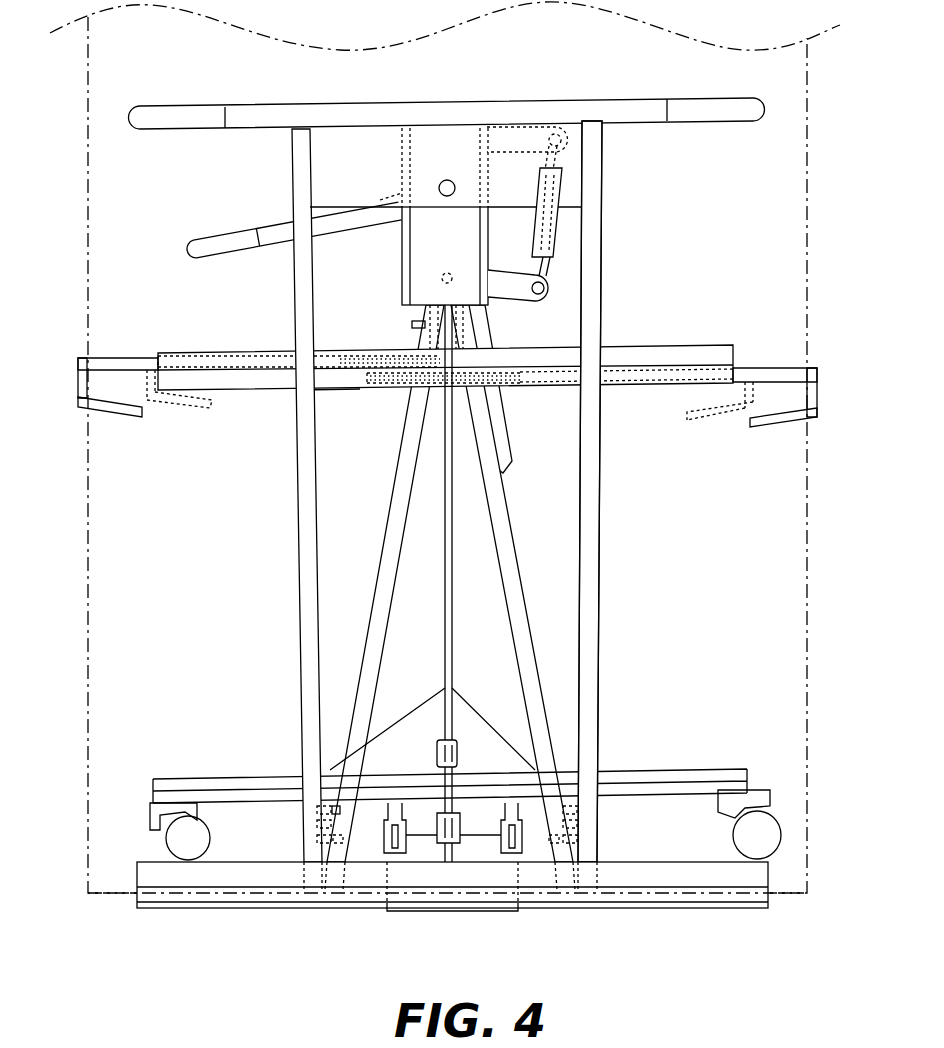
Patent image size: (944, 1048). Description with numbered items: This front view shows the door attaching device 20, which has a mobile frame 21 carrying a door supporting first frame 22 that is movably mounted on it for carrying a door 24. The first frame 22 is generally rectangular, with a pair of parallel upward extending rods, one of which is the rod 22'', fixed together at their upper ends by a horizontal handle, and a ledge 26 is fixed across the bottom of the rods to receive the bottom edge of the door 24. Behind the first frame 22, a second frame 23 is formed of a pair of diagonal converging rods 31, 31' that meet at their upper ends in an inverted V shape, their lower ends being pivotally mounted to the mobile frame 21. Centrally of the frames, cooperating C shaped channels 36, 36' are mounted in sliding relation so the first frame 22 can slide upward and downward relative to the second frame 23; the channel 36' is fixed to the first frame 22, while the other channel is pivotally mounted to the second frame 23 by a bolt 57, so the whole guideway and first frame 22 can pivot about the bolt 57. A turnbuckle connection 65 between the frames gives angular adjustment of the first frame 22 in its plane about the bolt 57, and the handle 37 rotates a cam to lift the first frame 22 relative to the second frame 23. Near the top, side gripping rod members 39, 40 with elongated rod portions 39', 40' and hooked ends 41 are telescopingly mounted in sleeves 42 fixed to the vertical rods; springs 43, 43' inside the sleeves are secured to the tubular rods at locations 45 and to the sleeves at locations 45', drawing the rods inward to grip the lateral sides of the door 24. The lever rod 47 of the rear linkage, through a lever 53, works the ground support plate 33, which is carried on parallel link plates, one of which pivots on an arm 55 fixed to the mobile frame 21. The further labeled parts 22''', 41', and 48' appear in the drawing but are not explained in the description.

The door attaching device 20 is at (500, 390).
The mobile frame 21 is at (438, 698).
The first frame 22 is at (633, 491).
The upward extending rod 22'' is at (447, 494).
The upright post 22''' is at (629, 505).
The second frame 23 is at (502, 496).
The door 24 is at (809, 523).
The ledge 26 is at (283, 908).
The rod 31 is at (513, 597).
The rod 31' is at (384, 597).
The support plate 33 is at (517, 908).
The C shaped channel 36 is at (414, 216).
The guideway 36' is at (511, 216).
The handle 37 is at (230, 253).
The side gripping rod member 39 is at (118, 331).
The elongated rod portion 39' is at (167, 355).
The side gripping rod member 40 is at (775, 350).
The elongated rod portion 40' is at (834, 368).
The hooked end 41 is at (450, 407).
The hook in alternate position 41' is at (450, 433).
The sleeve 42 is at (551, 352).
The spring 43 is at (299, 335).
The spring 43' is at (440, 407).
The spring mounting location 45 is at (425, 319).
The spring mounting location 45' is at (626, 409).
The lever rod 47 is at (453, 648).
The slide 48' is at (330, 417).
The lever 53 is at (438, 784).
The arm 55 is at (404, 785).
The bolt 57 is at (440, 278).
The turnbuckle connection 65 is at (558, 235).